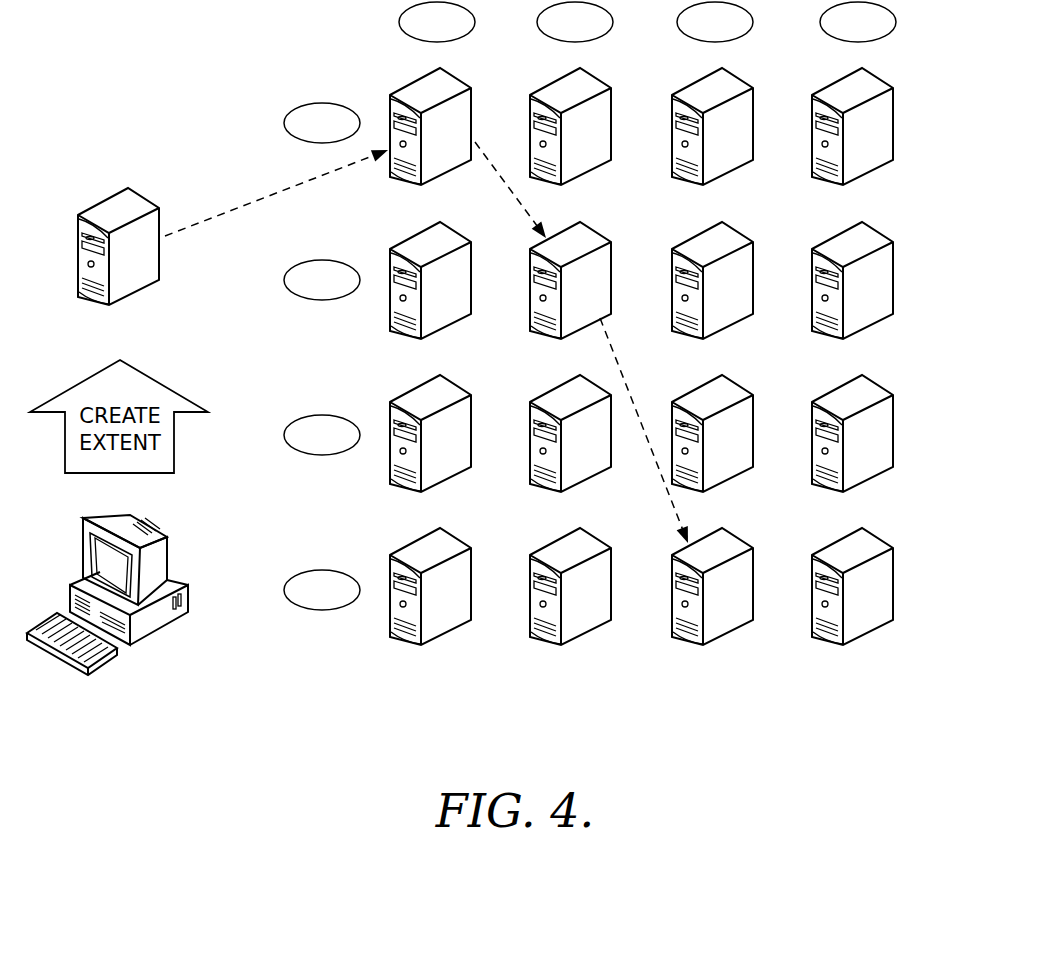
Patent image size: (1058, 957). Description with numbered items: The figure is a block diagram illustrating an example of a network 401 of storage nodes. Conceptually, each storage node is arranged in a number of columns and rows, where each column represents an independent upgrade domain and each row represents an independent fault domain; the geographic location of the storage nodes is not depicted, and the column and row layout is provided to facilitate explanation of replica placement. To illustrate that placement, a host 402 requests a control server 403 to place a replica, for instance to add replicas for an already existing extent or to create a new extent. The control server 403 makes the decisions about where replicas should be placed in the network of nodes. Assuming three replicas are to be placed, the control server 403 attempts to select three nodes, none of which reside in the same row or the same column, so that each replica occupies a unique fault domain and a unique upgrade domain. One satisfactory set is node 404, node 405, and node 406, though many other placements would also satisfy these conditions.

The network of storage nodes 401 is at (345, 63).
The host 402 is at (189, 596).
The control server 403 is at (161, 262).
The node 404 is at (471, 100).
The node 405 is at (612, 246).
The node 406 is at (733, 626).